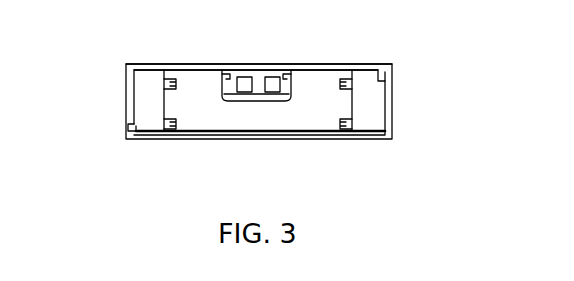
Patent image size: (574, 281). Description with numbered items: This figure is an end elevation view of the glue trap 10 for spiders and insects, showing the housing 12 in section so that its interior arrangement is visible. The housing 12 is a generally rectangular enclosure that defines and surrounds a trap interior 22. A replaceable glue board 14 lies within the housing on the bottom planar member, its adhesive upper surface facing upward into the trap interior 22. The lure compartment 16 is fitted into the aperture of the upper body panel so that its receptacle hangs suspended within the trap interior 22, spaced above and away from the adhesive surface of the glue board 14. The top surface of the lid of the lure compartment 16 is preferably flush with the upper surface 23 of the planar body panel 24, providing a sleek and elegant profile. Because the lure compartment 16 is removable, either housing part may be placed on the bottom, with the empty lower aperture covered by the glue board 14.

The glue trap 10 is at (97, 29).
The housing 12 is at (394, 92).
The replaceable glue board 14 is at (178, 130).
The lure compartment 16 is at (293, 90).
The trap interior 22 is at (308, 110).
The upper surface 23 is at (193, 63).
The planar body panel 24 is at (361, 72).